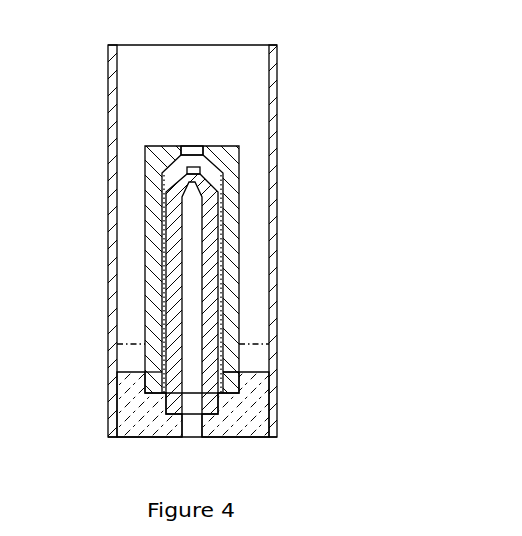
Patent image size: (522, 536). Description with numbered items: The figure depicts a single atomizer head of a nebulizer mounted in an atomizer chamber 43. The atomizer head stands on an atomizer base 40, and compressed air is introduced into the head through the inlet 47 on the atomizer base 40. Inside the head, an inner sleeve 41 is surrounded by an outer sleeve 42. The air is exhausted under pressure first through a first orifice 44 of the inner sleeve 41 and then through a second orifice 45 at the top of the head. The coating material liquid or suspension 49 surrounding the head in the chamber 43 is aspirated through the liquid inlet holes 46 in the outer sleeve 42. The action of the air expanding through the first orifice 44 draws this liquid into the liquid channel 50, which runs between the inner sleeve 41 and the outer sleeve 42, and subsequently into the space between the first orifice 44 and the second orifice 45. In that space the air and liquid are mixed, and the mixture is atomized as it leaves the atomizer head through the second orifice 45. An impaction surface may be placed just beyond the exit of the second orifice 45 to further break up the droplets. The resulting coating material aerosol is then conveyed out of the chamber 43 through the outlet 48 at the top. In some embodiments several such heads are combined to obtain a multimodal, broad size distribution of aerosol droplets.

The atomizer base 40 is at (283, 407).
The inner sleeve 41 is at (222, 206).
The outer sleeve 42 is at (242, 172).
The chamber 43 is at (103, 211).
The first orifice 44 is at (188, 168).
The second orifice 45 is at (190, 135).
The liquid inlet holes 46 is at (232, 364).
The inlet 47 is at (188, 443).
The outlet 48 is at (225, 60).
The coating material liquid or suspension 49 is at (255, 347).
The liquid channel 50 is at (165, 320).